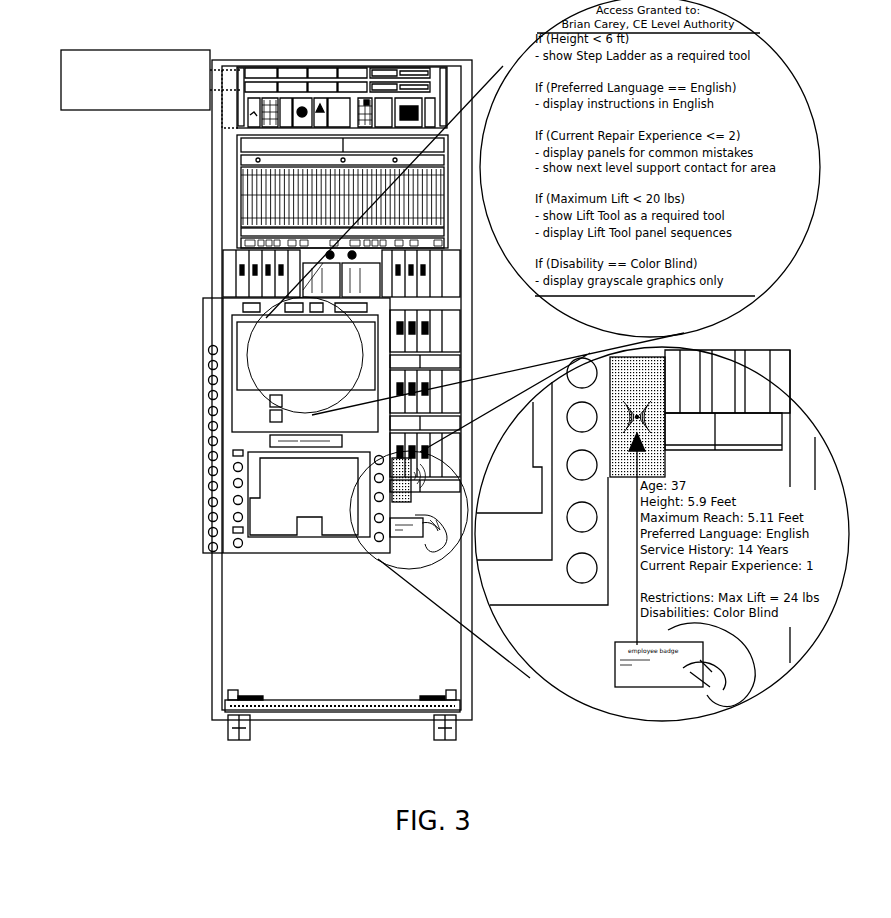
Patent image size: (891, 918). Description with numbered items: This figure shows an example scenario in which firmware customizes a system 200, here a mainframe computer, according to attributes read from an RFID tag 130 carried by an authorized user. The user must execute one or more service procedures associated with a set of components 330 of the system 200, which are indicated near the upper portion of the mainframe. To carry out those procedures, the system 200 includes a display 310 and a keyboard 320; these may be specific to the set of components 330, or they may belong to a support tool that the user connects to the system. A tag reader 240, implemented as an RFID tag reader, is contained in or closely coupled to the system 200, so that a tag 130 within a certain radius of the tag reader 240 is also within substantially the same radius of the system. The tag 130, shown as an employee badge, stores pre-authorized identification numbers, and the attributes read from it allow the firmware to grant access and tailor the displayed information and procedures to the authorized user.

The system 200 is at (274, 375).
The set of components 330 is at (150, 78).
The display 310 is at (308, 355).
The keyboard 320 is at (310, 509).
The tag reader 240 is at (358, 518).
The tag 130 is at (392, 536).